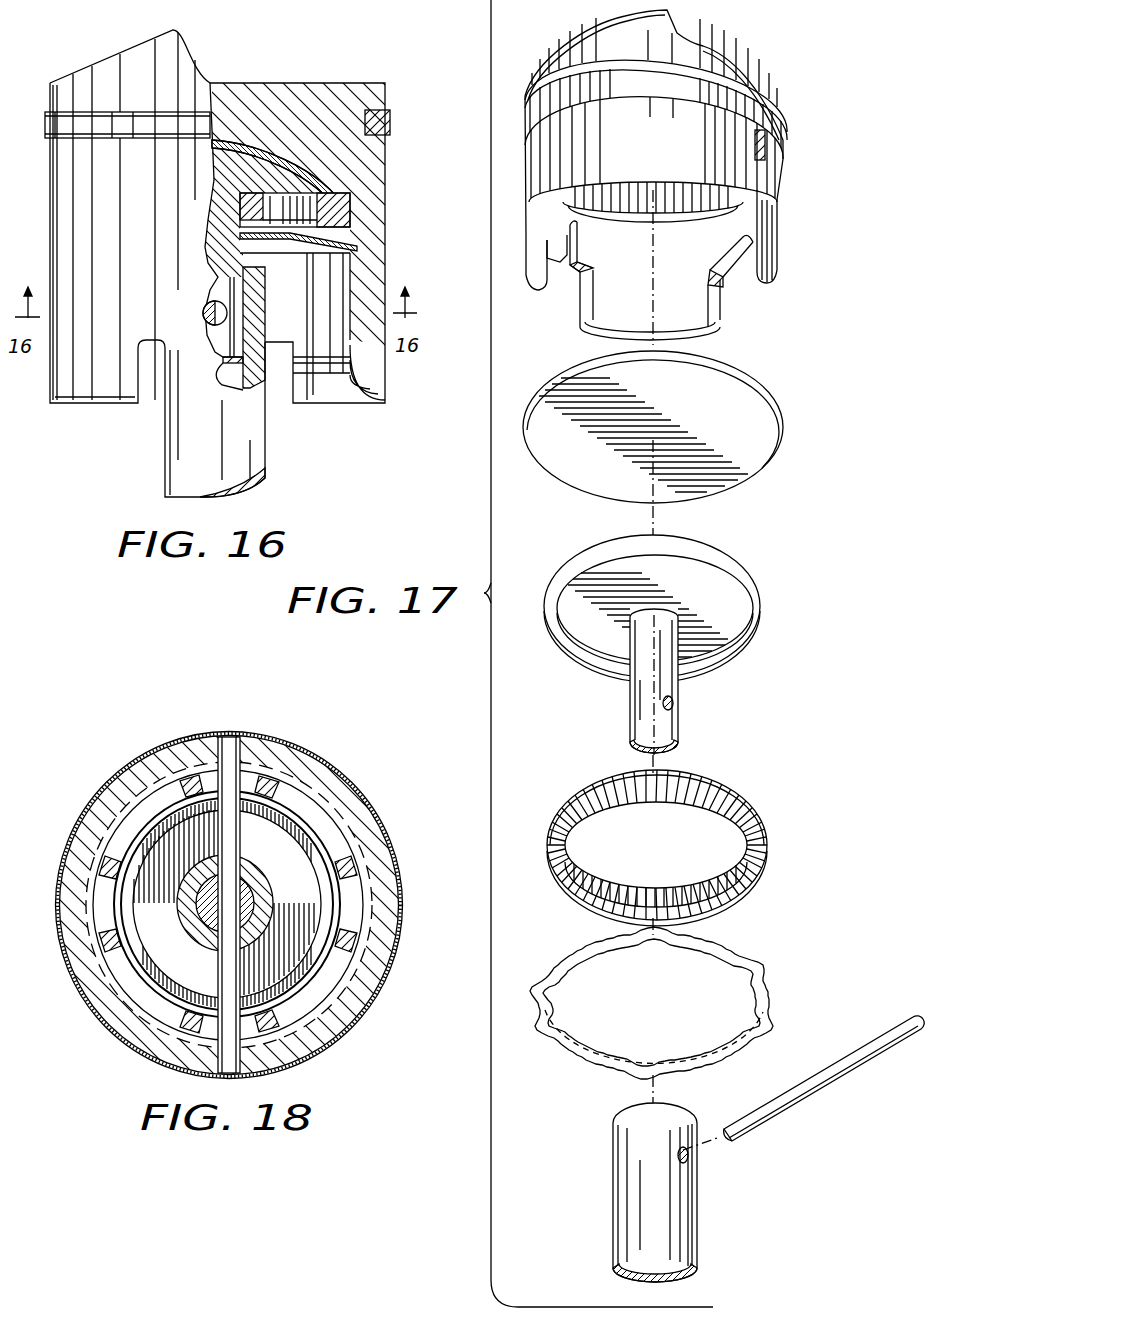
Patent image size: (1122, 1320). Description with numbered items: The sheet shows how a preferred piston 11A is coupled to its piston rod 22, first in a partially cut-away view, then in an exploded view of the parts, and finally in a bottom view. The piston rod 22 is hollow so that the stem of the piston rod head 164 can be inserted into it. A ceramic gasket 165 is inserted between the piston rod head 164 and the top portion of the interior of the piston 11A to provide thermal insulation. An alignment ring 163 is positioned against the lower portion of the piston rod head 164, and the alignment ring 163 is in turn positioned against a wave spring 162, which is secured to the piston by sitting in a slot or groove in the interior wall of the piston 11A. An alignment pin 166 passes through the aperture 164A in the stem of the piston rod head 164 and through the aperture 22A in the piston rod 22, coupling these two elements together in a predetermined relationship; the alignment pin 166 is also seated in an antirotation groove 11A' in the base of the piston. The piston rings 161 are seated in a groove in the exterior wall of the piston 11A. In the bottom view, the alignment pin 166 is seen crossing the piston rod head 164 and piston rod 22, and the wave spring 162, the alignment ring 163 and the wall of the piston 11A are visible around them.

In FIG. 17, the piston 11A is at (656, 173).
In FIG. 18, the piston 11A is at (229, 889).
In FIG. 17, the antirotation groove 11A' is at (797, 151).
In FIG. 16, the piston rings 161 is at (392, 112).
In FIG. 16, the wave spring 162 is at (355, 247).
In FIG. 17, the wave spring 162 is at (765, 991).
In FIG. 18, the wave spring 162 is at (290, 1010).
In FIG. 16, the alignment ring 163 is at (347, 220).
In FIG. 17, the alignment ring 163 is at (758, 851).
In FIG. 18, the alignment ring 163 is at (307, 832).
In FIG. 16, the piston rod head 164 is at (230, 183).
In FIG. 17, the piston rod head 164 is at (760, 604).
In FIG. 18, the piston rod head 164 is at (260, 884).
In FIG. 17, the aperture in piston rod head 164A is at (674, 702).
In FIG. 16, the ceramic gasket 165 is at (253, 140).
In FIG. 17, the ceramic gasket 165 is at (778, 452).
In FIG. 16, the alignment pin 166 is at (203, 310).
In FIG. 17, the alignment pin 166 is at (867, 1038).
In FIG. 18, the alignment pin 166 is at (240, 838).
In FIG. 16, the piston rod 22 is at (165, 440).
In FIG. 17, the piston rod 22 is at (613, 1187).
In FIG. 18, the piston rod 22 is at (258, 905).
In FIG. 17, the aperture in piston rod 22A is at (693, 1157).